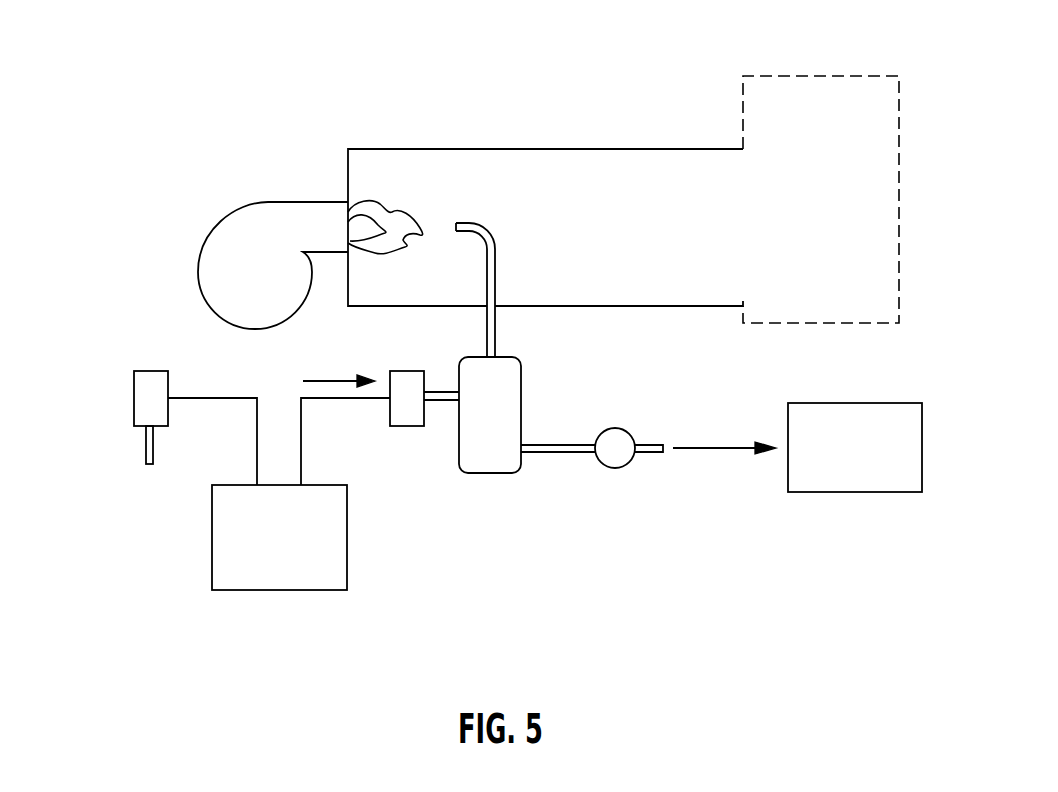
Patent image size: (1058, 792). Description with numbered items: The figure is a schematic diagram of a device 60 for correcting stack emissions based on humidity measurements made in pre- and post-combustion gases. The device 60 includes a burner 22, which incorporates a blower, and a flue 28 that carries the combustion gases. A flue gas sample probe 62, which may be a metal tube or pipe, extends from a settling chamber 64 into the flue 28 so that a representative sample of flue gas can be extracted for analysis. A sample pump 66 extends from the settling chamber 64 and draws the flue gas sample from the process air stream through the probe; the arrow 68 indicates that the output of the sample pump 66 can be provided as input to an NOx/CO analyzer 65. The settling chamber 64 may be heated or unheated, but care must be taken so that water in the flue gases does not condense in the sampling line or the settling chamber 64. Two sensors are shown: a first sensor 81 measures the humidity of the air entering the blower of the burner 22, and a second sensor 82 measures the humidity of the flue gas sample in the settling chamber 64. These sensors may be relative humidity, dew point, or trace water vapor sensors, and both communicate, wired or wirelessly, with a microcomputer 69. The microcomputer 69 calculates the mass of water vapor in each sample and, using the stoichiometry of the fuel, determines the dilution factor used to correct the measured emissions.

The device for correcting emissions 60 is at (433, 84).
The burner 22 is at (262, 212).
The flue 28 is at (720, 148).
The flue gas sample probe 62 is at (495, 240).
The settling chamber 64 is at (526, 381).
The sample pump 66 is at (613, 471).
The arrow 68 is at (718, 452).
The NOx/CO analyzer 65 is at (853, 493).
The microcomputer 69 is at (277, 591).
The first sensor 81 is at (138, 428).
The second sensor 82 is at (405, 427).